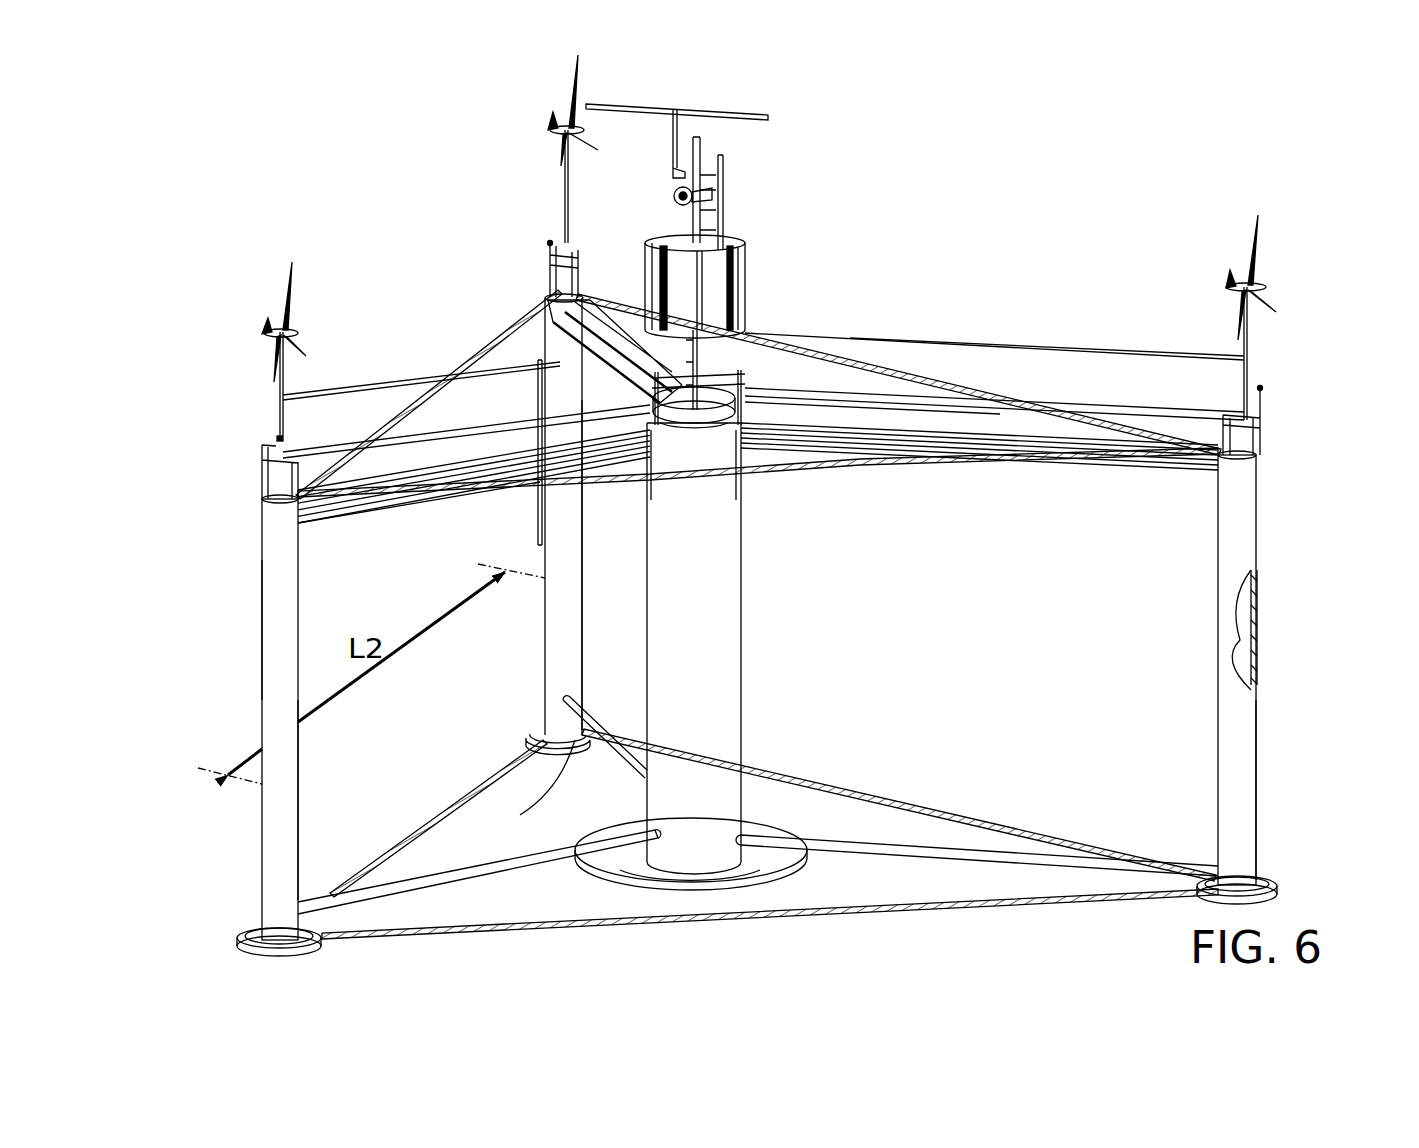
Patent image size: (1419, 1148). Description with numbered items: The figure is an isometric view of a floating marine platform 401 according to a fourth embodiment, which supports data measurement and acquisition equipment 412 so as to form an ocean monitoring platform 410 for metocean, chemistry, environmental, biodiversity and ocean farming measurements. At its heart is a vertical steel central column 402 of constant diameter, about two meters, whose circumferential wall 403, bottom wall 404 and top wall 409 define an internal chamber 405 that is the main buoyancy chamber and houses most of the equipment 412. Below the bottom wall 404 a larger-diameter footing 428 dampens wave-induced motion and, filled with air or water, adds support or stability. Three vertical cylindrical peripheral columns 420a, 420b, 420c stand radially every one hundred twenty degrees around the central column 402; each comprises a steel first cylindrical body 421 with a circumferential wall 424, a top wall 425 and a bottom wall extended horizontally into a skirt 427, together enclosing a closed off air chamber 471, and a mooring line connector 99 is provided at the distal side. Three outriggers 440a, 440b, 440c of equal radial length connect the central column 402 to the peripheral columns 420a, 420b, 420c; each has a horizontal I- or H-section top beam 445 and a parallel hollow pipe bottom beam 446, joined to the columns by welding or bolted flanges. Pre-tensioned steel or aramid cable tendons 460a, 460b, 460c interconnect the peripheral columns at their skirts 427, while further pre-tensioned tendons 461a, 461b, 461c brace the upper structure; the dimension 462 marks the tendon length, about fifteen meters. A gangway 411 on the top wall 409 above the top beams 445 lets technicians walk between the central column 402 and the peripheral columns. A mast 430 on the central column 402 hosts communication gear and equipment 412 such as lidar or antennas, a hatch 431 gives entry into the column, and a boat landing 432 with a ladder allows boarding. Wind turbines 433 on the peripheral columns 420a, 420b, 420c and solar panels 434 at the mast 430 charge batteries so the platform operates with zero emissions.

The mooring line connector 99 is at (245, 942).
The floating marine platform 401 is at (262, 556).
The central column 402 is at (742, 492).
The circumferential wall 403 is at (737, 582).
The bottom wall 404 is at (720, 880).
The internal chamber 405 is at (712, 547).
The top wall 409 is at (735, 402).
The ocean monitoring platform 410 is at (872, 158).
The gangway 411 is at (1155, 410).
The data measurement and acquisition equipment 412 is at (720, 114).
The peripheral column 420a is at (542, 296).
The peripheral column 420b is at (1258, 490).
The peripheral column 420c is at (262, 648).
The first cylindrical body 421 is at (262, 824).
The circumferential wall 424 is at (1258, 608).
The top wall 425 is at (260, 490).
The skirt 427 is at (250, 932).
The footing 428 is at (640, 880).
The mast 430 is at (706, 235).
The hatch 431 is at (700, 398).
The boat landing 432 is at (530, 526).
The wind turbine 433 is at (265, 330).
The solar panels 434 is at (746, 275).
The outrigger 440a is at (598, 322).
The outrigger 440b is at (1015, 440).
The outrigger 440c is at (442, 476).
The top beam 445 is at (543, 413).
The bottom beam 446 is at (515, 865).
The tendon 460a is at (860, 802).
The tendon 460b is at (502, 923).
The tendon 460c is at (410, 832).
The tendon 461a is at (890, 365).
The tendon 461b is at (890, 468).
The tendon 461c is at (395, 420).
The dimension L2 462 is at (487, 648).
The closed off air chamber 471 is at (1240, 635).